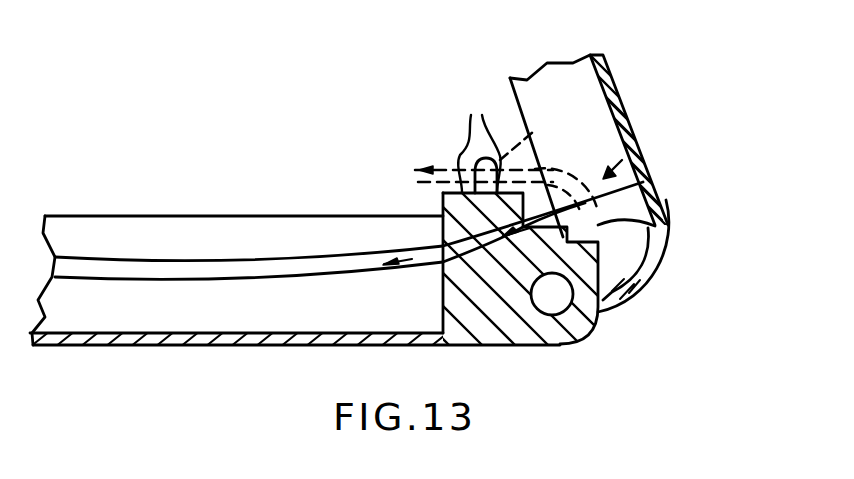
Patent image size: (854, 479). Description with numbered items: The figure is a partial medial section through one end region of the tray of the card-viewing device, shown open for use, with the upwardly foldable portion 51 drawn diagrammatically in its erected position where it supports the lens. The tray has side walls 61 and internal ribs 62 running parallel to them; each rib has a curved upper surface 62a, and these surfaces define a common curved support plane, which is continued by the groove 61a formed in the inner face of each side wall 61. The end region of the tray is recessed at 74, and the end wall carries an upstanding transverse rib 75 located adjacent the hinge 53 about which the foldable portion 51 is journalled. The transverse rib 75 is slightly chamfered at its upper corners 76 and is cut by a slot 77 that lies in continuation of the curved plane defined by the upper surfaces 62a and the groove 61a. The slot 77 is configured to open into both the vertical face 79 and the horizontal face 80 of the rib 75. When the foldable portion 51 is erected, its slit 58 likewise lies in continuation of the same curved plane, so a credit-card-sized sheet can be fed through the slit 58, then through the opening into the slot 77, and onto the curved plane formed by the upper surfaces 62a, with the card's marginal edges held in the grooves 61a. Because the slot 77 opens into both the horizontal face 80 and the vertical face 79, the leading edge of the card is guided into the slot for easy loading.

The upwardly foldable portion 51 is at (416, 170).
The hinge 53 is at (557, 303).
The slit 58 is at (534, 132).
The side wall 61 is at (253, 232).
The groove 61a is at (168, 268).
The internal rib 62 is at (397, 313).
The upper surface of rib 62a is at (213, 282).
The recess 74 is at (666, 210).
The upstanding transverse rib 75 is at (463, 170).
The chamfered upper corners 76 is at (479, 137).
The slot 77 is at (478, 247).
The vertical face 79 is at (562, 164).
The horizontal face 80 is at (640, 184).